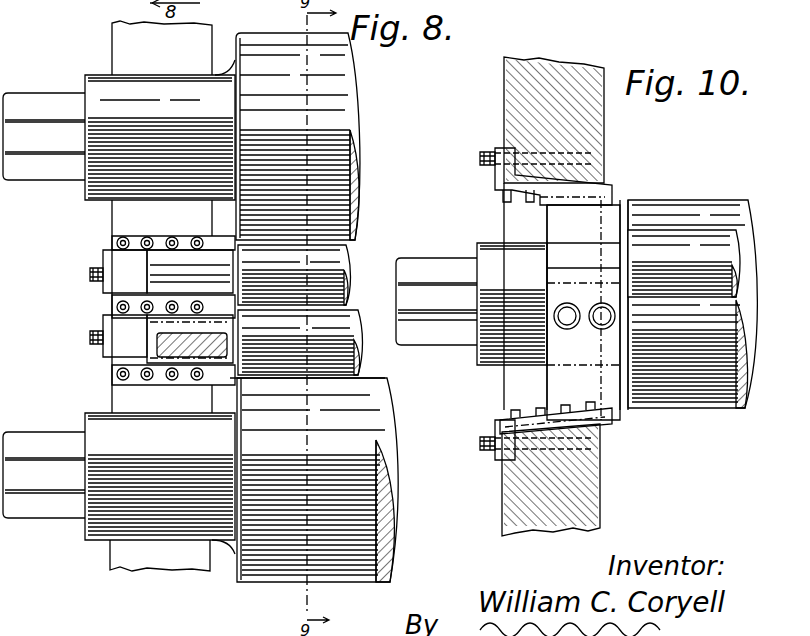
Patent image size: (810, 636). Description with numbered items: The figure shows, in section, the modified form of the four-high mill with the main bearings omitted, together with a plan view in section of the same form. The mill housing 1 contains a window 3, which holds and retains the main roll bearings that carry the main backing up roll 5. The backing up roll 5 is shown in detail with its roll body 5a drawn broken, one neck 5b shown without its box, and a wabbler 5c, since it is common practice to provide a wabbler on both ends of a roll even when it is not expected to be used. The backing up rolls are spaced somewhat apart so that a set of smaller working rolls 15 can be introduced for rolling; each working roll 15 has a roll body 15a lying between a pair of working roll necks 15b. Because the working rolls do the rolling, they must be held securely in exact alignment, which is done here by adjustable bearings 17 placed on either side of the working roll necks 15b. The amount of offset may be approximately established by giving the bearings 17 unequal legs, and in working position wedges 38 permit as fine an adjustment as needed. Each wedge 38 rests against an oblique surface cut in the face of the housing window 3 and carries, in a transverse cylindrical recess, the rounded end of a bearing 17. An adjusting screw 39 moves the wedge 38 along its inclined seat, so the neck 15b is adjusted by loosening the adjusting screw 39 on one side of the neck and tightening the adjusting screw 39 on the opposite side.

In FIG. 8, the mill housing 1 is at (214, 30).
In FIG. 10, the mill housing 1 is at (512, 95).
In FIG. 10, the window 3 is at (512, 215).
In FIG. 10, the main backing up roll 5 is at (682, 208).
In FIG. 8, the roll body 5a is at (358, 94).
In FIG. 8, the neck 5b is at (96, 80).
In FIG. 10, the neck 5b is at (488, 256).
In FIG. 8, the wabbler 5c is at (22, 107).
In FIG. 10, the wabbler 5c is at (437, 335).
In FIG. 8, the working roll 15 is at (318, 366).
In FIG. 10, the working roll 15 is at (698, 243).
In FIG. 8, the roll body 15a is at (340, 260).
In FIG. 8, the working roll neck 15b is at (162, 268).
In FIG. 8, the adjustable bearing 17 is at (159, 250).
In FIG. 10, the adjustable bearing 17 is at (557, 380).
In FIG. 8, the wedge 38 is at (110, 284).
In FIG. 10, the wedge 38 is at (613, 191).
In FIG. 8, the adjusting screw 39 is at (90, 271).
In FIG. 10, the adjusting screw 39 is at (480, 158).